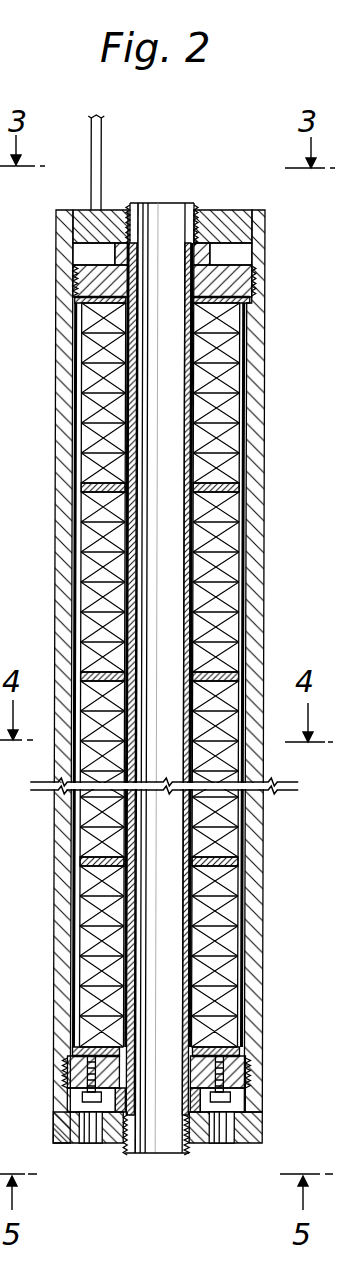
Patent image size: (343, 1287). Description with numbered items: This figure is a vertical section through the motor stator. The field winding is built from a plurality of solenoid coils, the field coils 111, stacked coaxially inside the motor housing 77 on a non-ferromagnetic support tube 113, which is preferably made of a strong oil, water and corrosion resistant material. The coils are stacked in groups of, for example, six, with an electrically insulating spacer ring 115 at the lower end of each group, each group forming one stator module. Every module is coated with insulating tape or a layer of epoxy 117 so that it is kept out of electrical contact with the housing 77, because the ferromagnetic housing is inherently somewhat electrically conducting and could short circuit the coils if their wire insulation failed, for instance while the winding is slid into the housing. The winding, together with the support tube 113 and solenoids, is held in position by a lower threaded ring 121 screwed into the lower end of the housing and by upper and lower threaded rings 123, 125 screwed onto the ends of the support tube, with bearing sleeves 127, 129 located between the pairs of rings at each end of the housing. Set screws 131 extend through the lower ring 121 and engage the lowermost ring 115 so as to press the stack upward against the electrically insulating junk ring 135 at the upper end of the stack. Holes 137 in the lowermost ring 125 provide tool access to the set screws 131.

The motor housing 77 is at (256, 421).
The field coils 111 is at (246, 376).
The support tube 113 is at (242, 468).
The electrically insulating spacer ring 115 is at (224, 496).
The insulating tape or epoxy layer 117 is at (233, 560).
The lower threaded ring 121 is at (242, 1057).
The upper threaded ring 123 is at (225, 210).
The lower threaded ring 125 is at (242, 1135).
The bearing sleeve 127 is at (215, 254).
The bearing sleeve 129 is at (241, 277).
The set screws 131 is at (236, 1070).
The electrically insulating junk ring 135 is at (235, 304).
The holes 137 is at (226, 1143).